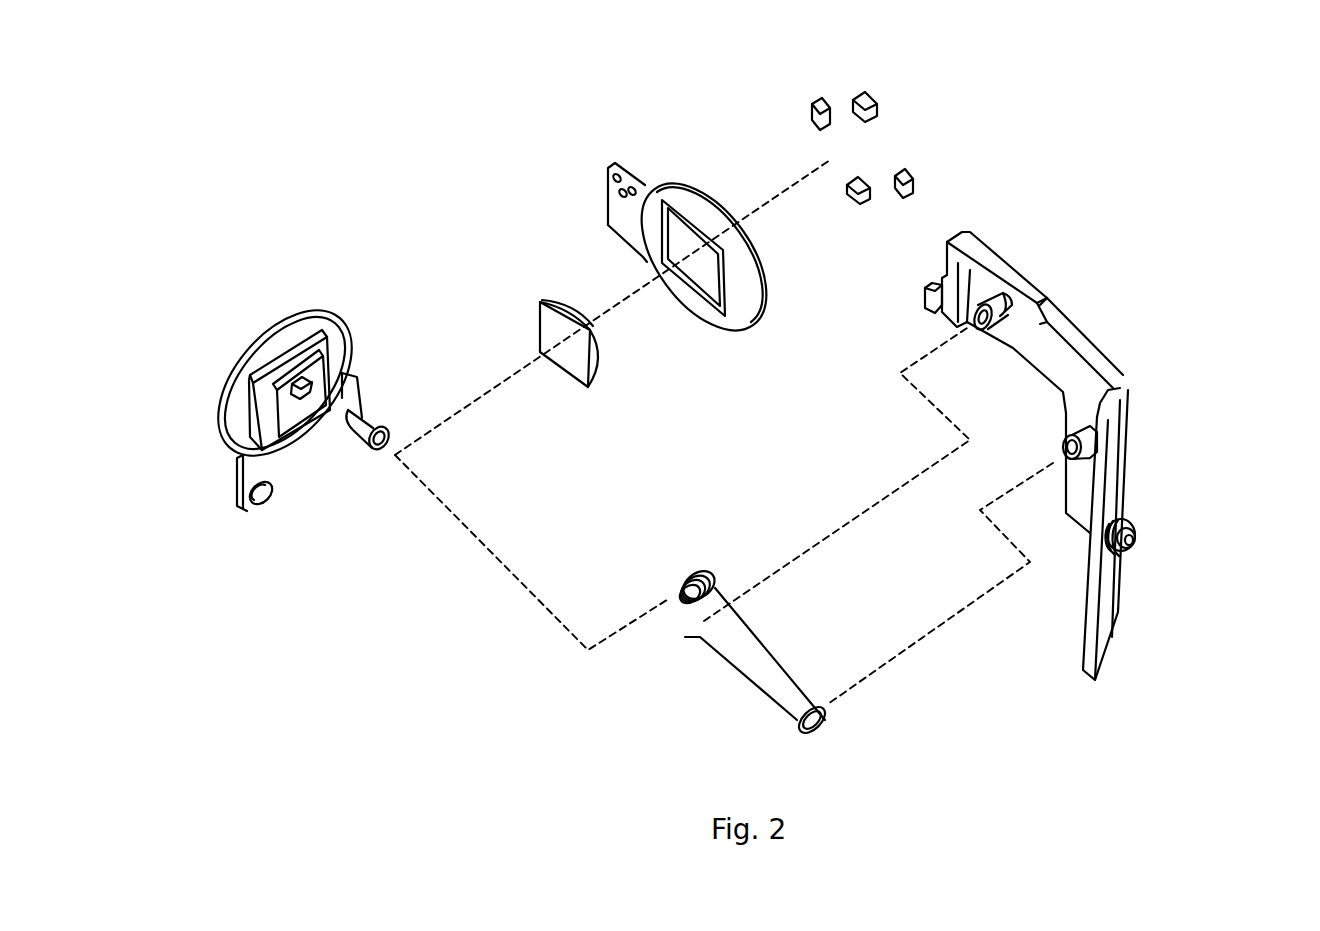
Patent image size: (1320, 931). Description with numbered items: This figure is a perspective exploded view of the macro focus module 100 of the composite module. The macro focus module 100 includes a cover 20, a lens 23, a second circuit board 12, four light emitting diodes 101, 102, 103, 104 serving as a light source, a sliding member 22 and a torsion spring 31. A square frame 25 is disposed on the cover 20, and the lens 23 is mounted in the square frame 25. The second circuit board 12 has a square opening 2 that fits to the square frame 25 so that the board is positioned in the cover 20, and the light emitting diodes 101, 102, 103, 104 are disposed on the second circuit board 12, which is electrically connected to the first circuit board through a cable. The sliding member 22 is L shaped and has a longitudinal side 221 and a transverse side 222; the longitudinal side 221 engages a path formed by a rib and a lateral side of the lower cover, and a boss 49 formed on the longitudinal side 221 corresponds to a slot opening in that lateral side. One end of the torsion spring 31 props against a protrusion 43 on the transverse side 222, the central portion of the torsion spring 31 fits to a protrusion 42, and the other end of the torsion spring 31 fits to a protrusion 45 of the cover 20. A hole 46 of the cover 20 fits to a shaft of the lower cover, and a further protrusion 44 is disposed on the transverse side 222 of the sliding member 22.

The macro focus module 100 is at (236, 74).
The square opening 2 is at (682, 230).
The second circuit board 12 is at (610, 200).
The cover 20 is at (330, 320).
The sliding member 22 is at (1068, 338).
The lens 23 is at (542, 303).
The square frame 25 is at (226, 418).
The torsion spring 31 is at (740, 671).
The protrusion 42 is at (1062, 450).
The protrusion 43 is at (985, 324).
The protrusion 44 is at (924, 295).
The protrusion 45 is at (374, 423).
The hole 46 is at (262, 506).
The boss 49 is at (1142, 530).
The light emitting diode 101 is at (916, 186).
The light emitting diode 102 is at (878, 106).
The light emitting diode 103 is at (806, 112).
The light emitting diode 104 is at (849, 197).
The longitudinal side 221 is at (1108, 600).
The transverse side 222 is at (1022, 272).